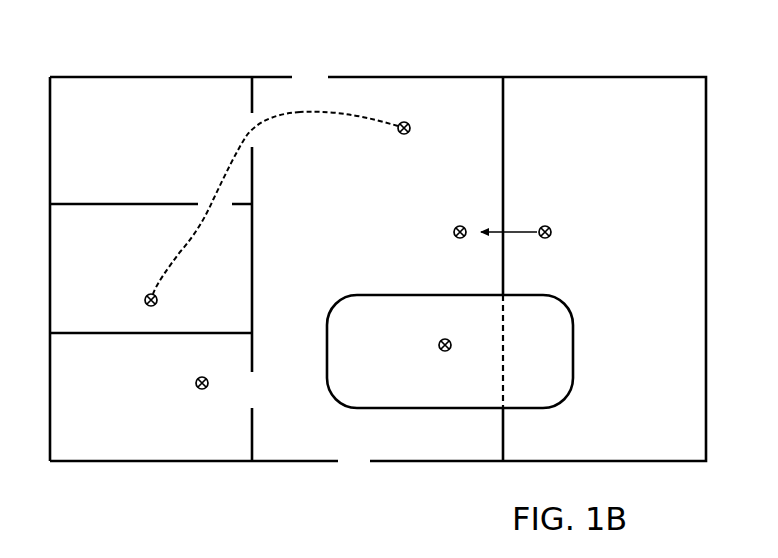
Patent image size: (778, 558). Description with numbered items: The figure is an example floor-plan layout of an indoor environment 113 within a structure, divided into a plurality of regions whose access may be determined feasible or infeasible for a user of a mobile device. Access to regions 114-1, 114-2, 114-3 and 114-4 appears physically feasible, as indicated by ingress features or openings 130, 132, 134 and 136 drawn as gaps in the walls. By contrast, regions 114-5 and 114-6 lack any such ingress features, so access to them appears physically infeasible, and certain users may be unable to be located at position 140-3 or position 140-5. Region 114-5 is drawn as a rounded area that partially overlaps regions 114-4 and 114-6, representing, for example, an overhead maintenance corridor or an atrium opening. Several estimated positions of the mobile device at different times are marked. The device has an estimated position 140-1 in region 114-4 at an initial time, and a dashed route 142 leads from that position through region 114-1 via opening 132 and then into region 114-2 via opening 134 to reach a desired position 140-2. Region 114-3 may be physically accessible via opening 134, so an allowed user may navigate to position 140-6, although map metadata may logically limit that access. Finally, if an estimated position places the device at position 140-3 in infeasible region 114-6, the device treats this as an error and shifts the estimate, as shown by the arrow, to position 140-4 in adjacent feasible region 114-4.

The indoor environment 113 is at (459, 59).
The region 114-1 is at (118, 164).
The region 114-2 is at (118, 292).
The region 114-3 is at (118, 447).
The region 114-4 is at (318, 238).
The region 114-5 is at (472, 391).
The region 114-6 is at (633, 143).
The ingress feature 130 is at (314, 70).
The opening 132 is at (261, 139).
The opening 134 is at (206, 196).
The ingress feature 136 is at (358, 468).
The estimated position 140-1 is at (415, 119).
The desired position 140-2 is at (162, 290).
The position 140-3 is at (554, 214).
The position 140-4 is at (453, 222).
The position 140-5 is at (439, 336).
The position 140-6 is at (196, 373).
The route 142 is at (331, 112).